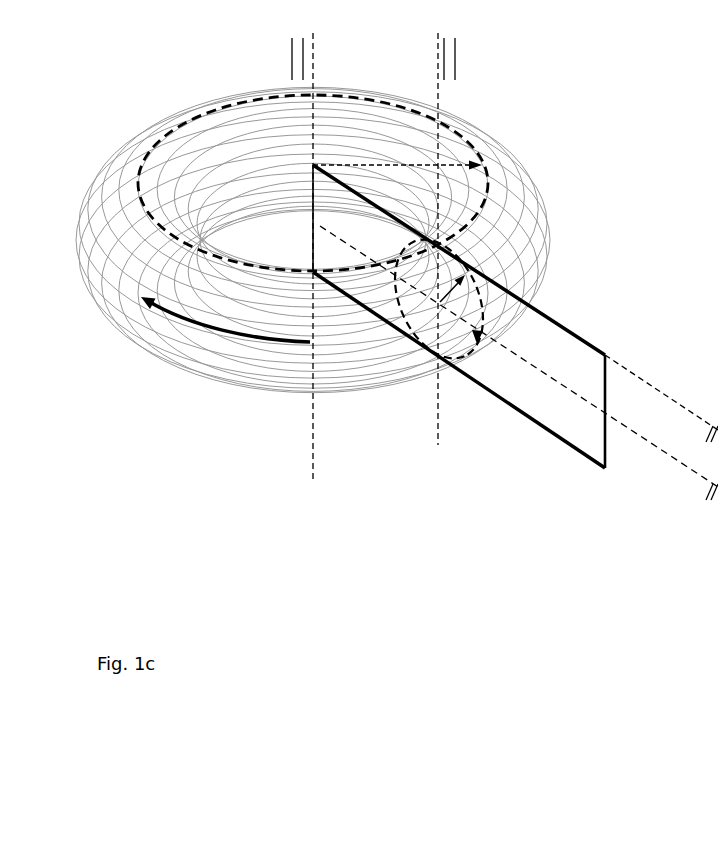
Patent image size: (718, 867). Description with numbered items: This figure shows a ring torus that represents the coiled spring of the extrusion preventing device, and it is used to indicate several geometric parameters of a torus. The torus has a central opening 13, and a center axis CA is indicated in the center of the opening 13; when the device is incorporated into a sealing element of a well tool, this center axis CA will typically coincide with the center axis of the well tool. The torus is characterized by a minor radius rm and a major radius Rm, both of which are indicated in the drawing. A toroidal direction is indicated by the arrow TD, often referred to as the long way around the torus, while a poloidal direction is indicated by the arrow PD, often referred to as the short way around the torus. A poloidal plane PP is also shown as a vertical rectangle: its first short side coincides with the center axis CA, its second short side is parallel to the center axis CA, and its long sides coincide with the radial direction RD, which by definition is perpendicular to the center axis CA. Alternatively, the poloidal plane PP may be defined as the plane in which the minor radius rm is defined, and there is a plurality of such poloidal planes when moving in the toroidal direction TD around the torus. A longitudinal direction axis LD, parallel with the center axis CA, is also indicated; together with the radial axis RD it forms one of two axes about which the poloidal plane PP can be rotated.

The opening 13 is at (306, 238).
The center axis CA is at (323, 250).
The longitudinal direction axis LD is at (447, 256).
The major radius Rm is at (313, 183).
The minor radius rm is at (438, 281).
The poloidal plane PP is at (516, 397).
The poloidal direction PD is at (477, 308).
The radial direction RD is at (519, 363).
The toroidal direction TD is at (210, 342).